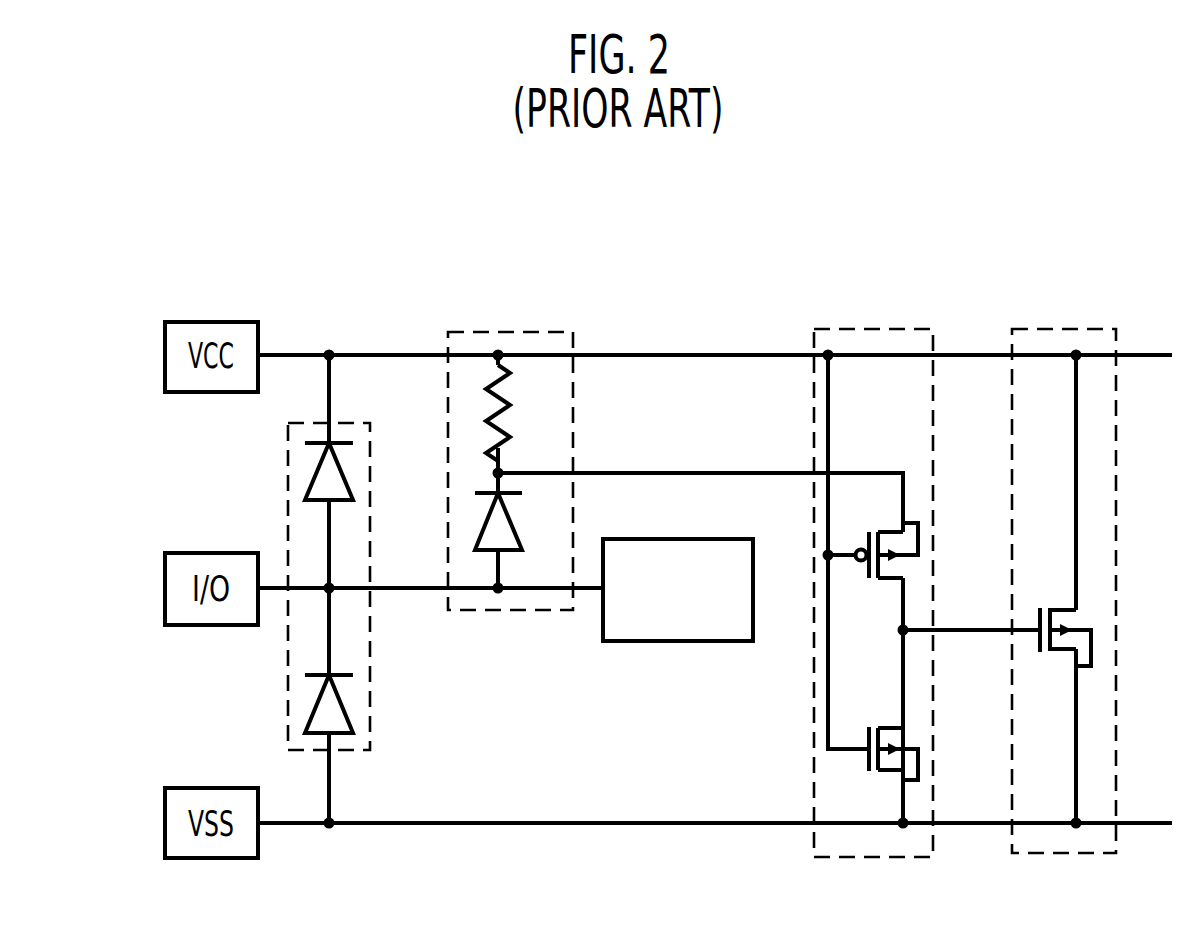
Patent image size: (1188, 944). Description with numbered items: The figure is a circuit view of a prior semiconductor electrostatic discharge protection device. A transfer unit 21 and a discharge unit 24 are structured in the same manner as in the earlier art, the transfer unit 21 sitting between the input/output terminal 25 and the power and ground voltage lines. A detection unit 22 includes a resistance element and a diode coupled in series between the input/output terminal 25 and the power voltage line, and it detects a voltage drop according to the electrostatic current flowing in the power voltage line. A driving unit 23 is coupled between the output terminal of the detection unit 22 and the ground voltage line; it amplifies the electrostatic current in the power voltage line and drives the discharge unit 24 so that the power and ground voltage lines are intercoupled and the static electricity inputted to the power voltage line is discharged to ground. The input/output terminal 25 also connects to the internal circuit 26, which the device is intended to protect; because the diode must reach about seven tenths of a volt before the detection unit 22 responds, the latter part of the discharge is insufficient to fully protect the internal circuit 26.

The transfer unit 21 is at (372, 470).
The detection unit 22 is at (513, 330).
The driving unit 23 is at (874, 328).
The discharge unit 24 is at (1065, 326).
The input/output terminal 25 is at (212, 553).
The internal circuit 26 is at (705, 539).